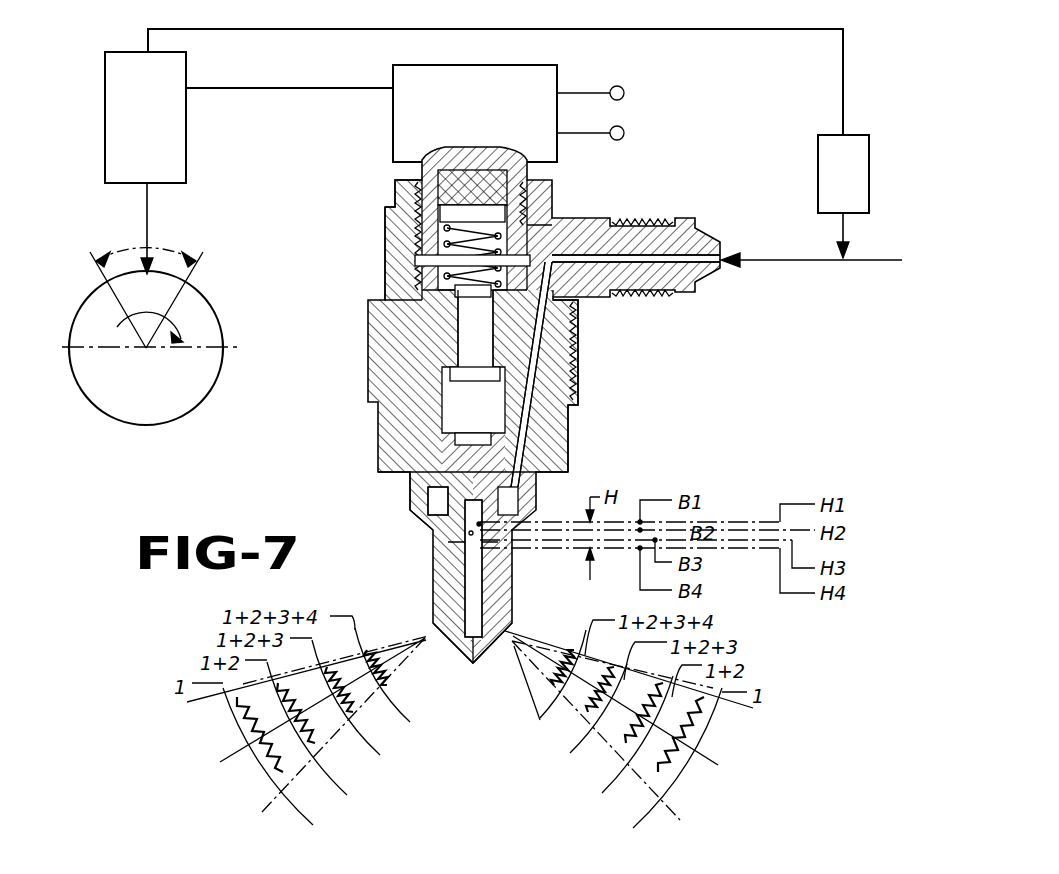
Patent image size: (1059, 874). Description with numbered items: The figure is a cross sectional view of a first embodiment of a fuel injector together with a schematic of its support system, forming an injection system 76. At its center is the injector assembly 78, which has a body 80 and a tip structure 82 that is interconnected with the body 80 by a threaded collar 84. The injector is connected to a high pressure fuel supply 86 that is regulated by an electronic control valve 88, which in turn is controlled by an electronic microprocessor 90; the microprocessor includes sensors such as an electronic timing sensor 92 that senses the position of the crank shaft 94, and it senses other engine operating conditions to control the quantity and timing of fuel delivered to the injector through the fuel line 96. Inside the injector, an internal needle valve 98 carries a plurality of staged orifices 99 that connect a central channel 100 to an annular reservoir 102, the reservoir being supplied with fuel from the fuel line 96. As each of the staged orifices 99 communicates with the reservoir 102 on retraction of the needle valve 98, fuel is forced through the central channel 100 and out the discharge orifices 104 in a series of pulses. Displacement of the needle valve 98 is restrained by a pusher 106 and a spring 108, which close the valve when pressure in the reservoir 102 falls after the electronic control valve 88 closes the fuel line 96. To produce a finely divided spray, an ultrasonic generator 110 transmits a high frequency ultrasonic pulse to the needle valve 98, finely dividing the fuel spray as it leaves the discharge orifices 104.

The injection system 76 is at (572, 71).
The injector assembly 78 is at (572, 212).
The body 80 is at (388, 240).
The tip structure 82 is at (410, 495).
The threaded collar 84 is at (580, 352).
The high pressure fuel supply 86 is at (868, 250).
The electronic control valve 88 is at (818, 170).
The electronic microprocessor 90 is at (178, 167).
The electronic timing sensor 92 is at (150, 224).
The crank shaft 94 is at (207, 316).
The fuel line 96 is at (728, 265).
The needle valve 98 is at (505, 453).
The staged orifices 99 is at (477, 525).
The central channel 100 is at (472, 575).
The annular reservoir 102 is at (437, 503).
The discharge orifices 104 is at (443, 633).
The pusher 106 is at (466, 335).
The spring 108 is at (445, 262).
The ultrasonic generator 110 is at (393, 130).